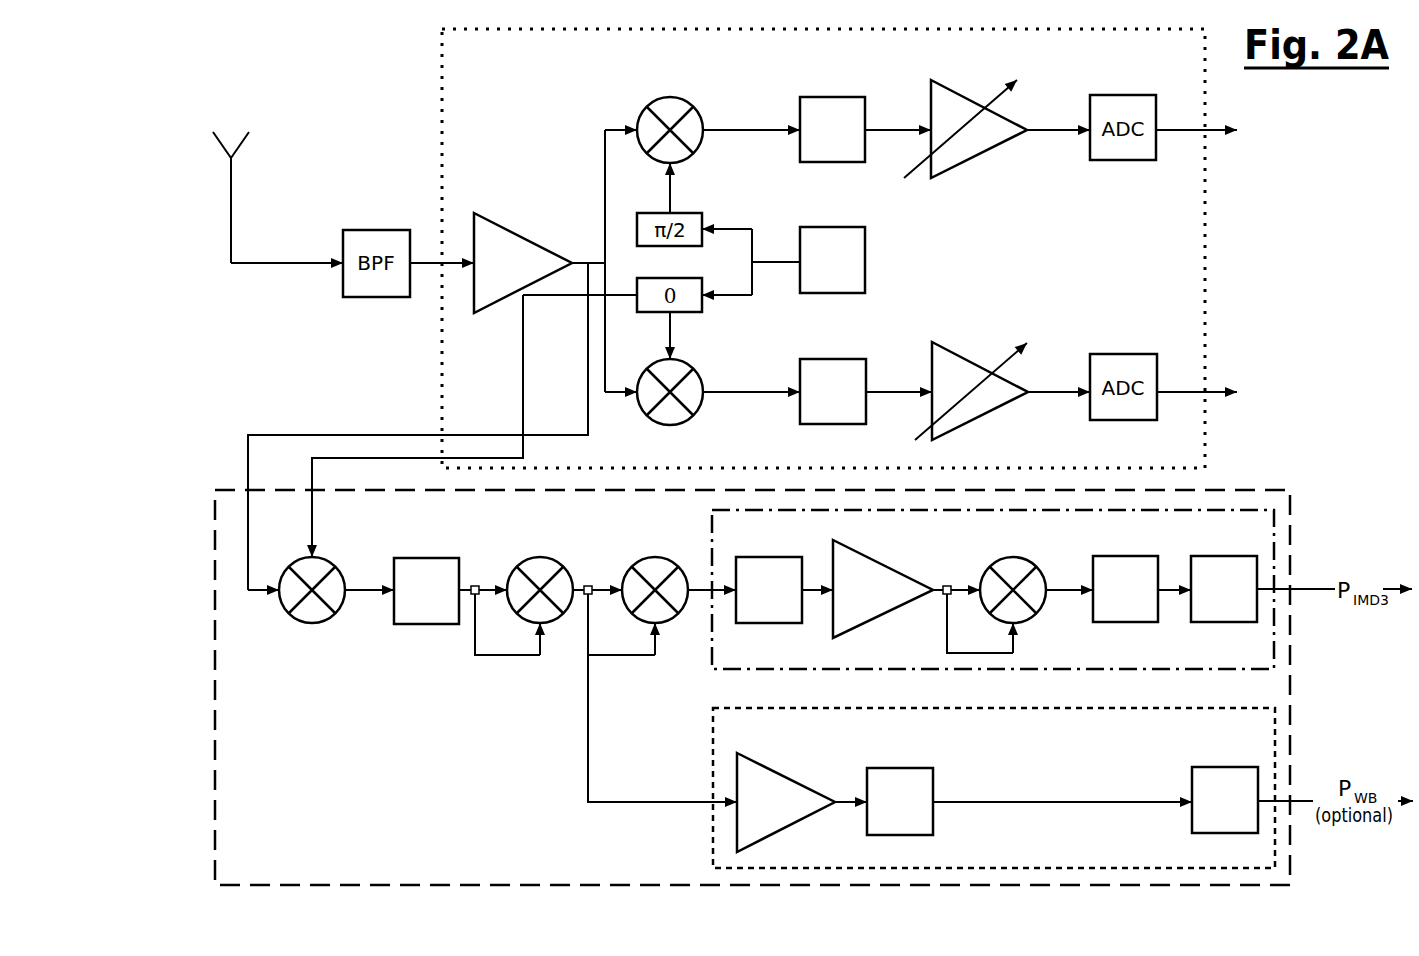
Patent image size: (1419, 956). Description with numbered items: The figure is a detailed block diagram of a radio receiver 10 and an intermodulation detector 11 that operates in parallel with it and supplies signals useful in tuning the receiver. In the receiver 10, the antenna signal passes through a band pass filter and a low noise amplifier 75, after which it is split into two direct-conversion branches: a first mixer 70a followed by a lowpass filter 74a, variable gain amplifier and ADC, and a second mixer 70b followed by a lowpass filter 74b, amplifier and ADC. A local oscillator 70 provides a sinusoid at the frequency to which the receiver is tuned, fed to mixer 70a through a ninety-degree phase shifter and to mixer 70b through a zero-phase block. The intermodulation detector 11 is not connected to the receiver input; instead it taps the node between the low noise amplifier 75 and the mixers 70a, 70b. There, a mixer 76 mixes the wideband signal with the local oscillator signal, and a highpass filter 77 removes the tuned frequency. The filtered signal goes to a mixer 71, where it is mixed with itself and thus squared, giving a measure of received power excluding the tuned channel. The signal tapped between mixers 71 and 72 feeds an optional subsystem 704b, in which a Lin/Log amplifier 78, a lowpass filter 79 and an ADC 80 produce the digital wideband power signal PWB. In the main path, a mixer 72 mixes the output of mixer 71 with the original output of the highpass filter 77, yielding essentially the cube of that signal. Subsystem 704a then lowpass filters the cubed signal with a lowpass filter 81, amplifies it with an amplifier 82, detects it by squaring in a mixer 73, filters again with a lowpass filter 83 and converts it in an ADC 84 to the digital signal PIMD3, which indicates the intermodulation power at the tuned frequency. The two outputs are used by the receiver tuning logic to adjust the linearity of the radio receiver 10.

The radio receiver 10 is at (438, 105).
The intermodulation detector 11 is at (236, 492).
The local oscillator 70 is at (868, 243).
The mixer 70a is at (688, 96).
The mixer 70b is at (688, 360).
The mixer 71 is at (542, 557).
The mixer 72 is at (657, 555).
The mixer 73 is at (1015, 555).
The lowpass filter 74a is at (850, 96).
The lowpass filter 74b is at (850, 360).
The low noise amplifier 75 is at (492, 218).
The mixer 76 is at (328, 557).
The highpass filter 77 is at (427, 625).
The Lin/Log amplifier 78 is at (788, 775).
The lowpass filter 79 is at (927, 767).
The ADC 80 is at (1212, 765).
The lowpass filter 81 is at (770, 555).
The amplifier 82 is at (885, 562).
The lowpass filter 83 is at (1126, 556).
The ADC 84 is at (1223, 556).
The subsystem 704a is at (711, 670).
The subsystem 704b is at (712, 852).